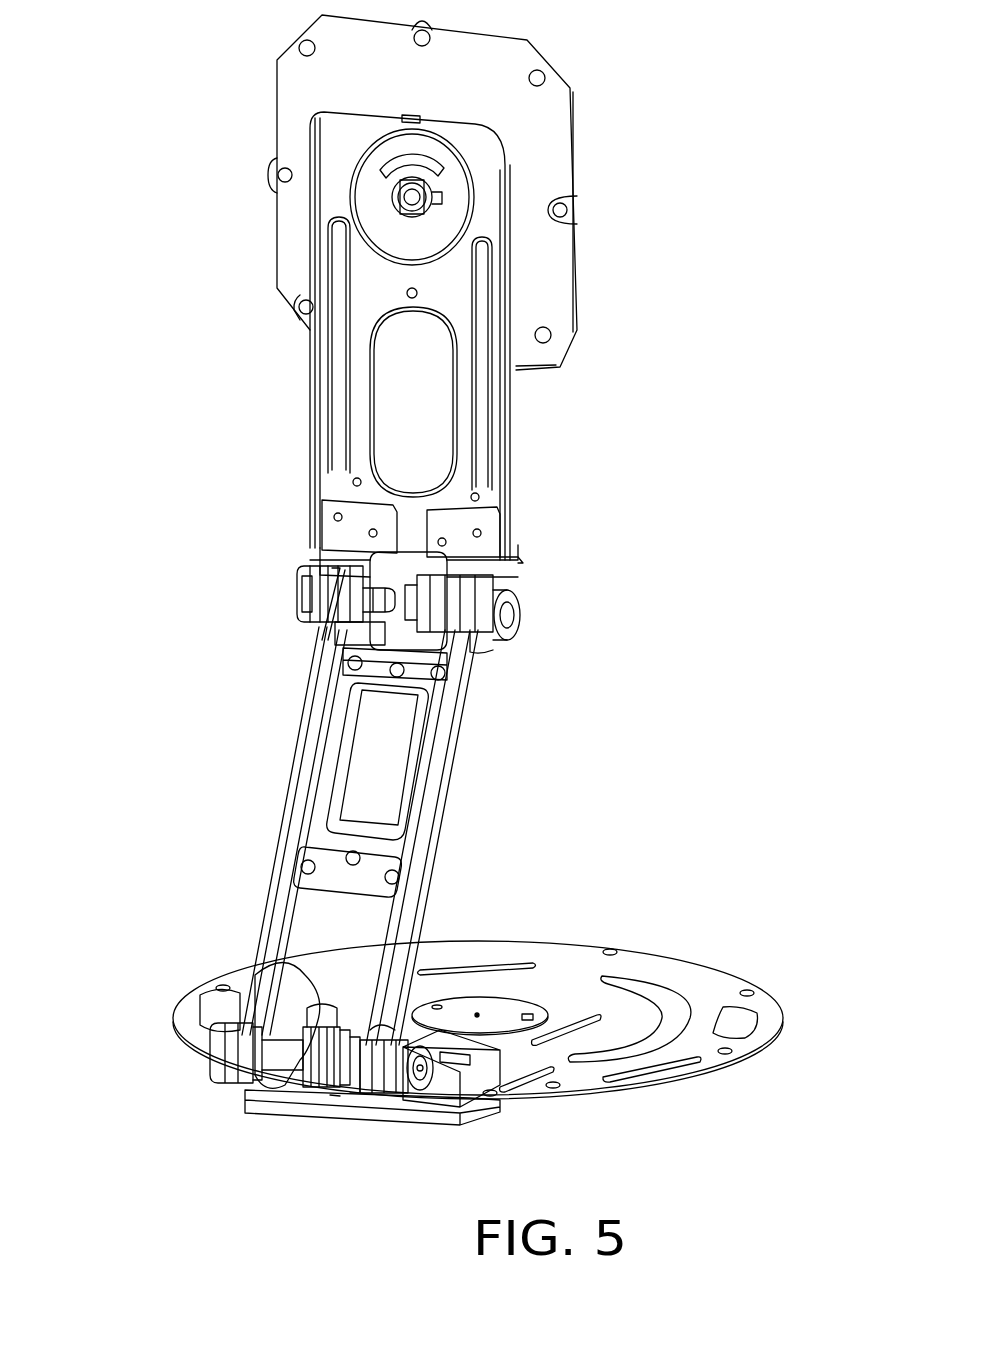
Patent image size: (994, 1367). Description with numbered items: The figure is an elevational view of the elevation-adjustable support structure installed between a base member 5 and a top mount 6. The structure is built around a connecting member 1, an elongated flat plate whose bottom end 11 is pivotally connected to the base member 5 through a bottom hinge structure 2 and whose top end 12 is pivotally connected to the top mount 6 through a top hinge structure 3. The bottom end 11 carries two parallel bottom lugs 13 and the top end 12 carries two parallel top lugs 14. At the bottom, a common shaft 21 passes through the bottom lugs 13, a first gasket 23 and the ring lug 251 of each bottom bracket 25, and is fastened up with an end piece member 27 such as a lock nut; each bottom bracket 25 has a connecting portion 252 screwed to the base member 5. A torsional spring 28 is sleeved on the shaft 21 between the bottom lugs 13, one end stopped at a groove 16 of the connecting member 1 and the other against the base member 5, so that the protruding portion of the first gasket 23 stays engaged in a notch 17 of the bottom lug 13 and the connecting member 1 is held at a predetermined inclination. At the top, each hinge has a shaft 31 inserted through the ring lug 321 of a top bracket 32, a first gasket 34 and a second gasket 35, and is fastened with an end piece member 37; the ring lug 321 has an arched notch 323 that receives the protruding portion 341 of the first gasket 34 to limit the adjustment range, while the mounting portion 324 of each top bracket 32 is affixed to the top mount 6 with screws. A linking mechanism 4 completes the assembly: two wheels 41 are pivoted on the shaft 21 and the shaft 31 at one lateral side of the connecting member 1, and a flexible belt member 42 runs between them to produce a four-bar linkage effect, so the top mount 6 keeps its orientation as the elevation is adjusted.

The connecting member 1 is at (413, 803).
The bottom hinge structure 2 is at (372, 1098).
The top hinge structure 3 is at (535, 560).
The linking mechanism 4 is at (300, 685).
The base member 5 is at (687, 973).
The top mount 6 is at (480, 393).
The bottom end 11 is at (270, 1083).
The top end 12 is at (335, 638).
The bottom lugs 13 is at (260, 1065).
The top lugs 14 is at (495, 578).
The groove 16 is at (317, 1000).
The notch 17 is at (347, 1093).
The shaft 21 is at (420, 1073).
The first gasket 23 is at (380, 940).
The bottom bracket 25 is at (497, 1058).
The end piece member 27 is at (415, 1102).
The torsional spring 28 is at (303, 1087).
The shaft 31 is at (507, 615).
The top bracket 32 is at (483, 512).
The first gasket 34 is at (297, 592).
The second gasket 35 is at (477, 593).
The end piece member 37 is at (415, 587).
The wheels 41 is at (323, 585).
The flexible belt member 42 is at (303, 712).
The ring lug 251 is at (220, 1038).
The connecting portion 252 is at (510, 1015).
The ring lug 321 is at (493, 650).
The arched notch 323 is at (330, 563).
The mounting portion 324 is at (343, 507).
The protruding portion 341 is at (303, 607).